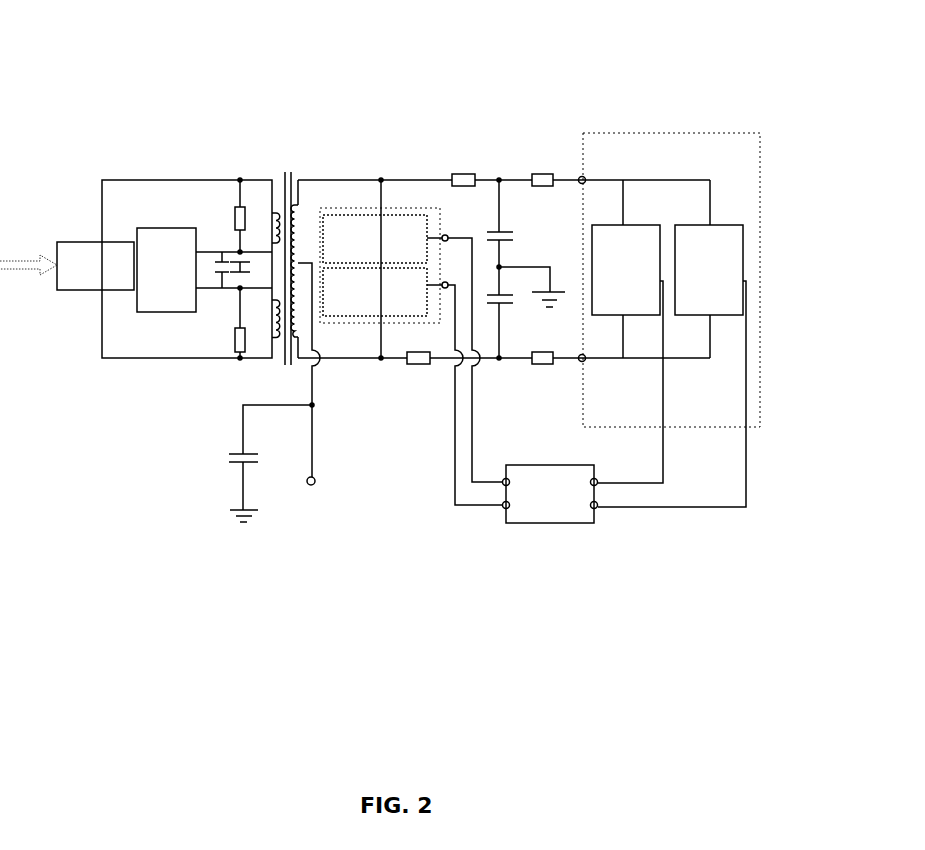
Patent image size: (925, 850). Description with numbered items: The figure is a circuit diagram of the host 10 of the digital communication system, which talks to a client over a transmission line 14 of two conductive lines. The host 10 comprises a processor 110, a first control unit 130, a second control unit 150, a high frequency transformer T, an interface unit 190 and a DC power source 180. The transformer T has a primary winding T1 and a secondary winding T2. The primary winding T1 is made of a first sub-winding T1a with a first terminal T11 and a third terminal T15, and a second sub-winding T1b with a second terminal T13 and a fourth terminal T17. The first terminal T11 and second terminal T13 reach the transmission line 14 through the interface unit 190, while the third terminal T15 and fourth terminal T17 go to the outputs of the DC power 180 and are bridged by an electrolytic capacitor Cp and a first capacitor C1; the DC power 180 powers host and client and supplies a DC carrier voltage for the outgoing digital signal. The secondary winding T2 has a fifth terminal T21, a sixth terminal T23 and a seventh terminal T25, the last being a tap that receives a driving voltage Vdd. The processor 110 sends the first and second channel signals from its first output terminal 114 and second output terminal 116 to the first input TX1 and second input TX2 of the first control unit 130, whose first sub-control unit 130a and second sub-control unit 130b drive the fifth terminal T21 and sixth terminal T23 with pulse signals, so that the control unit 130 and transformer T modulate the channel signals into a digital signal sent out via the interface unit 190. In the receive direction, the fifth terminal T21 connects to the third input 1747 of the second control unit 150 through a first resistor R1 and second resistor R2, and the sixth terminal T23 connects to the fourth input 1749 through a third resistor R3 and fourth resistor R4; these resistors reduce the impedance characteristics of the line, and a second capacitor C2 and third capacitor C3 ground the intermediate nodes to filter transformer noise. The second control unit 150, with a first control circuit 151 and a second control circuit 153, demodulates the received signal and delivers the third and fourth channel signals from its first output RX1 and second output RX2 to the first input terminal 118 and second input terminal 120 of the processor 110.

The host 10 is at (376, 86).
The transmission line 14 is at (20, 261).
The processor 110 is at (539, 501).
The first output terminal 114 is at (503, 479).
The second output terminal 116 is at (503, 508).
The first input terminal 118 is at (597, 478).
The second input terminal 120 is at (598, 510).
The first control unit 130 is at (388, 236).
The first sub-control unit 130a is at (404, 215).
The second sub-control unit 130b is at (358, 318).
The second control unit 150 is at (632, 133).
The first control circuit 151 is at (651, 225).
The second control circuit 153 is at (735, 225).
The DC power source 180 is at (188, 228).
The interface unit 190 is at (82, 291).
The third input 1747 is at (582, 177).
The fourth input 1749 is at (581, 354).
The high frequency transformer T is at (285, 172).
The primary winding T1 is at (267, 97).
The first sub-winding T1a is at (263, 178).
The second sub-winding T1b is at (278, 205).
The first terminal T11 is at (272, 212).
The second terminal T13 is at (271, 338).
The third terminal T15 is at (268, 235).
The fourth terminal T17 is at (272, 292).
The secondary winding T2 is at (306, 225).
The fifth terminal T21 is at (302, 200).
The sixth terminal T23 is at (335, 366).
The seventh terminal T25 is at (313, 262).
The first input TX1 is at (446, 235).
The second input TX2 is at (448, 283).
The first output RX1 is at (663, 430).
The second output RX2 is at (746, 430).
The first resistor R1 is at (463, 169).
The second resistor R2 is at (542, 169).
The third resistor R3 is at (418, 369).
The fourth resistor R4 is at (542, 369).
The first capacitor C1 is at (250, 270).
The second capacitor C2 is at (511, 238).
The third capacitor C3 is at (503, 291).
The electrolytic capacitor Cp is at (213, 268).
The driving voltage Vdd is at (333, 482).